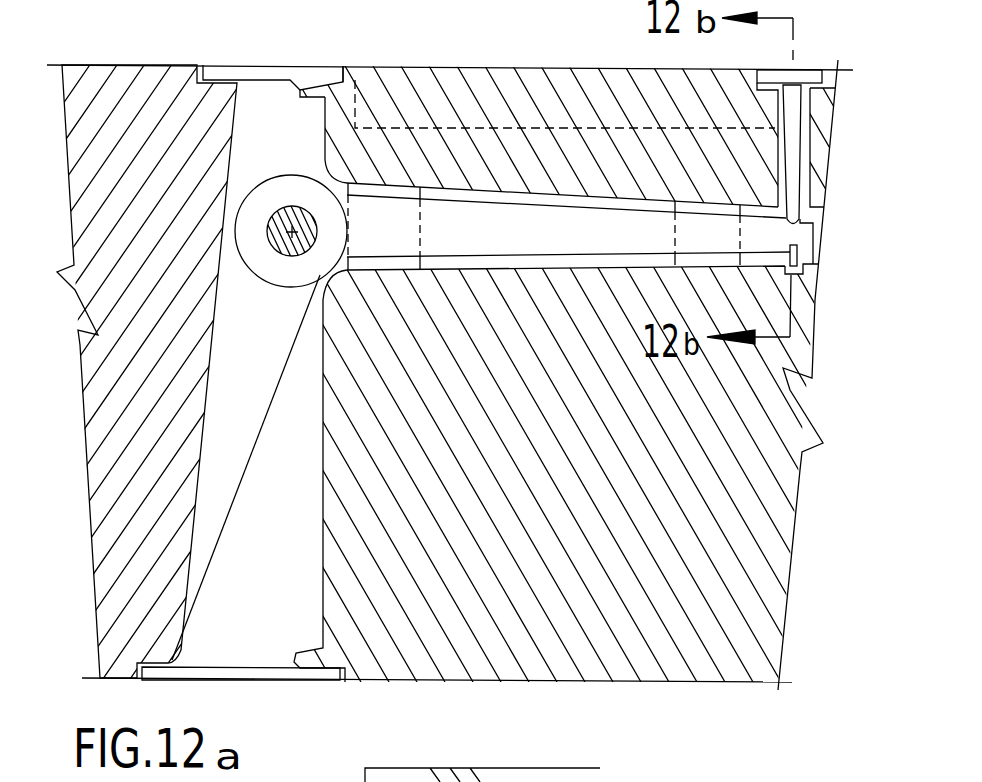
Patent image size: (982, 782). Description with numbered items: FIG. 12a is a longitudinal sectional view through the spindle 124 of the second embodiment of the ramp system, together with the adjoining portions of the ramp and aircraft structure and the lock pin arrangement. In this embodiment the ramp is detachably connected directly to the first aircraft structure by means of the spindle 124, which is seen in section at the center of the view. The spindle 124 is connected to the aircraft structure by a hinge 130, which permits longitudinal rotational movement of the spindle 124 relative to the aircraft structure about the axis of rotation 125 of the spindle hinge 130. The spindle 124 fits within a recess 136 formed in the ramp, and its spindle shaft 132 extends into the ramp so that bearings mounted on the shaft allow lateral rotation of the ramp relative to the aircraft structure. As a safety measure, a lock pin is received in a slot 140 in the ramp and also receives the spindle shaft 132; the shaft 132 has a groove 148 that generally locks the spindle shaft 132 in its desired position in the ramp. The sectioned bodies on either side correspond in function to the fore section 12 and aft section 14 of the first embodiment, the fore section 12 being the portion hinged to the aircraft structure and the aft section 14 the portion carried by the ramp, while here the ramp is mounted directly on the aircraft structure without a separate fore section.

The fore section 12 is at (85, 515).
The aft section 14 is at (838, 519).
The spindle 124 is at (300, 153).
The axis of rotation 125 is at (272, 209).
The hinge 130 is at (269, 240).
The spindle shaft 132 is at (443, 227).
The recess 136 is at (553, 267).
The slot 140 is at (757, 72).
The groove 148 is at (822, 272).